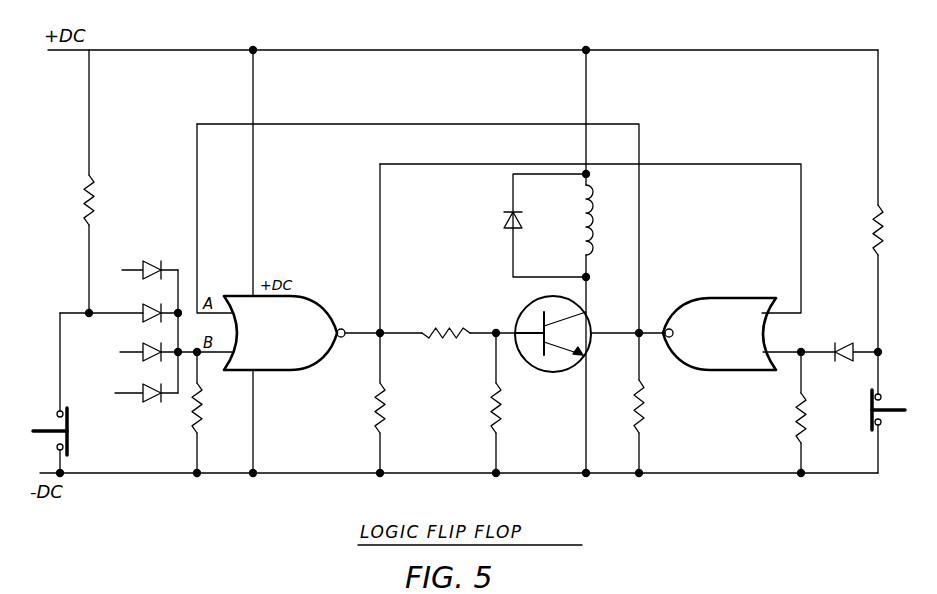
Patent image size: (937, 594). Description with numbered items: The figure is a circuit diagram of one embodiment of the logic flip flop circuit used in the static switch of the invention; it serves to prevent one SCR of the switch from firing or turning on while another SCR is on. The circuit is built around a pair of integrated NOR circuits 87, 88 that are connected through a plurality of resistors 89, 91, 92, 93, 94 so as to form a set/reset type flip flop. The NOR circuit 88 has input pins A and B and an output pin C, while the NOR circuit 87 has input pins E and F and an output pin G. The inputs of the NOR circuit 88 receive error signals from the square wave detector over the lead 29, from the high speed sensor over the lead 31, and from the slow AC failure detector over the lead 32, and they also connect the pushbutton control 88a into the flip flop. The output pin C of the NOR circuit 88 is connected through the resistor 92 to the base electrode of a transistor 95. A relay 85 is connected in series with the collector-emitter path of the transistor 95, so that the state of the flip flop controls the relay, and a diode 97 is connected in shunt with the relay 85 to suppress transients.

The lead 29 is at (130, 352).
The lead 31 is at (137, 268).
The lead 32 is at (133, 400).
The relay 85 is at (580, 240).
The NOR circuit 87 is at (708, 308).
The NOR circuit 88 is at (306, 312).
The pushbutton control 88a is at (72, 441).
The resistor 89 is at (796, 414).
The resistor 91 is at (646, 410).
The resistor 92 is at (441, 328).
The resistor 93 is at (376, 405).
The resistor 94 is at (202, 418).
The transistor 95 is at (575, 325).
The diode 97 is at (505, 222).